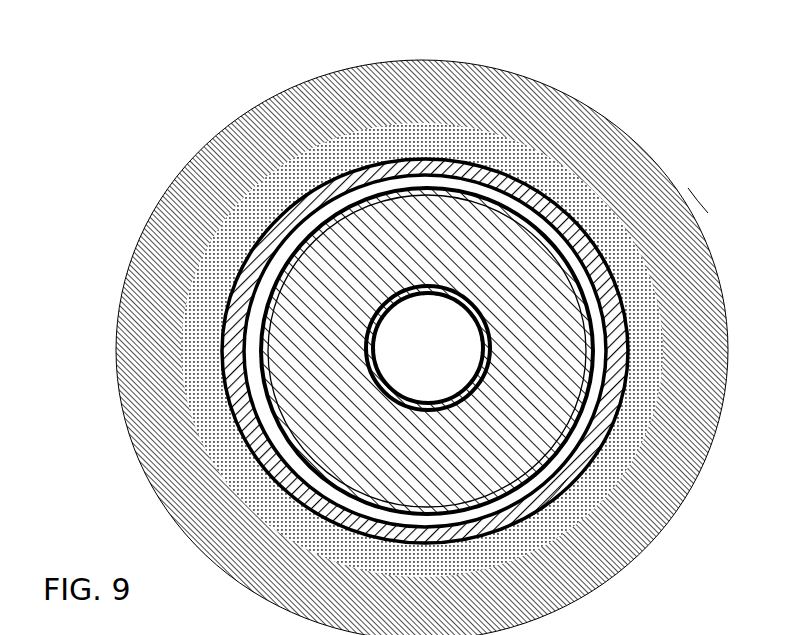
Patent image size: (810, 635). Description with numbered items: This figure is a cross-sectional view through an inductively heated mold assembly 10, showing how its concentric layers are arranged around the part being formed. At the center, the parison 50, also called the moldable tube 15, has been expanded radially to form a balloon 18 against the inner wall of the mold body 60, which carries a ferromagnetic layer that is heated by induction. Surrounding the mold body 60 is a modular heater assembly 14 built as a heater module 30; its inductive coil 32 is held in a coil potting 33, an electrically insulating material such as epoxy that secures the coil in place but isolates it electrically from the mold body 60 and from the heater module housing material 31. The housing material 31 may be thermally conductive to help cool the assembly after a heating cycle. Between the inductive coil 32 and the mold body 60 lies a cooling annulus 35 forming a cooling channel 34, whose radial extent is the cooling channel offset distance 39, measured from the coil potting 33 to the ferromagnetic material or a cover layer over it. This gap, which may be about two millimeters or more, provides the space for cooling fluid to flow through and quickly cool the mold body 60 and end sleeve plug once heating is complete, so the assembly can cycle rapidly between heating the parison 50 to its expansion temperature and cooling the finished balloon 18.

The inductively heated mold assembly 10 is at (100, 186).
The modular heater assembly 14 is at (708, 257).
The moldable tube 15 is at (480, 352).
The balloon 18 is at (358, 240).
The first heater module 30 is at (675, 188).
The heater module housing material 31 is at (688, 216).
The inductive coil 32 is at (513, 175).
The coil potting 33 is at (547, 187).
The cooling channel 34 is at (593, 193).
The cooling annulus 35 is at (433, 172).
The cooling channel offset distance 39 is at (620, 352).
The parison 50 is at (570, 457).
The mold body 60 is at (318, 286).